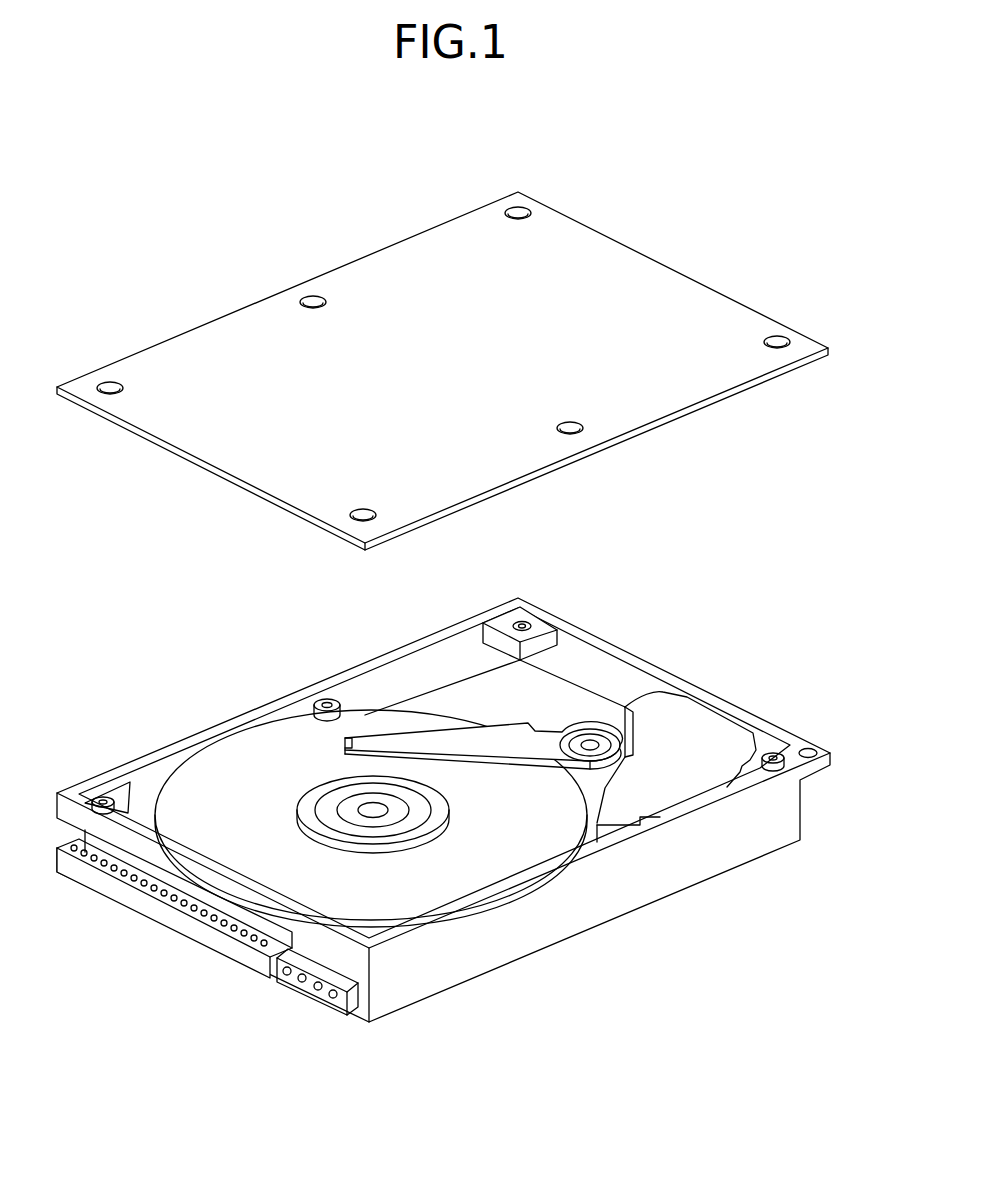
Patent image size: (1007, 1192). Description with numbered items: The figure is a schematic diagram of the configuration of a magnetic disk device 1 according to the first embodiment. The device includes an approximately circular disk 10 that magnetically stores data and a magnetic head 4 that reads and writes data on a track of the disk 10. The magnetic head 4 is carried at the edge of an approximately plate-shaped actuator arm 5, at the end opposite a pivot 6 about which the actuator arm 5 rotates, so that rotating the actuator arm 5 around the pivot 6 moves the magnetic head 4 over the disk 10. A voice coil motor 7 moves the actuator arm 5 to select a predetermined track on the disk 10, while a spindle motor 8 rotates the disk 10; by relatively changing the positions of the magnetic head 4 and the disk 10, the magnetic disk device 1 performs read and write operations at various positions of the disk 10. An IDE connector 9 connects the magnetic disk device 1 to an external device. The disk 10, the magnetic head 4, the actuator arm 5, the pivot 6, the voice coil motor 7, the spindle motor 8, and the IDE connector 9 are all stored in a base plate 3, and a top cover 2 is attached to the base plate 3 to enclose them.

The magnetic disk device 1 is at (752, 176).
The top cover 2 is at (650, 282).
The base plate 3 is at (782, 813).
The magnetic head 4 is at (348, 738).
The actuator arm 5 is at (552, 740).
The pivot 6 is at (594, 742).
The voice coil motor 7 is at (717, 745).
The spindle motor 8 is at (299, 806).
The IDE connector 9 is at (155, 925).
The disk 10 is at (293, 892).